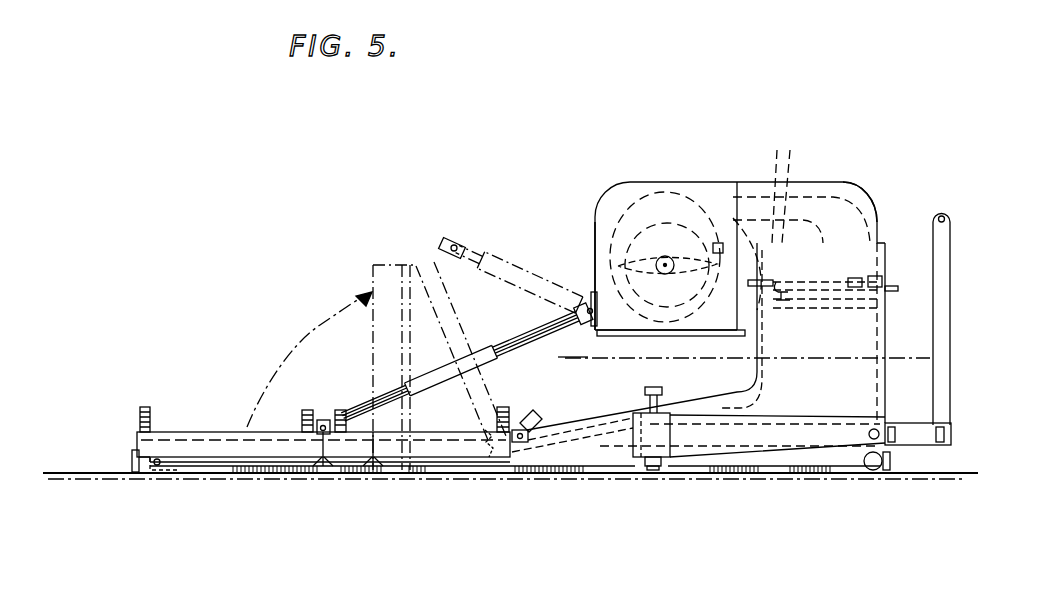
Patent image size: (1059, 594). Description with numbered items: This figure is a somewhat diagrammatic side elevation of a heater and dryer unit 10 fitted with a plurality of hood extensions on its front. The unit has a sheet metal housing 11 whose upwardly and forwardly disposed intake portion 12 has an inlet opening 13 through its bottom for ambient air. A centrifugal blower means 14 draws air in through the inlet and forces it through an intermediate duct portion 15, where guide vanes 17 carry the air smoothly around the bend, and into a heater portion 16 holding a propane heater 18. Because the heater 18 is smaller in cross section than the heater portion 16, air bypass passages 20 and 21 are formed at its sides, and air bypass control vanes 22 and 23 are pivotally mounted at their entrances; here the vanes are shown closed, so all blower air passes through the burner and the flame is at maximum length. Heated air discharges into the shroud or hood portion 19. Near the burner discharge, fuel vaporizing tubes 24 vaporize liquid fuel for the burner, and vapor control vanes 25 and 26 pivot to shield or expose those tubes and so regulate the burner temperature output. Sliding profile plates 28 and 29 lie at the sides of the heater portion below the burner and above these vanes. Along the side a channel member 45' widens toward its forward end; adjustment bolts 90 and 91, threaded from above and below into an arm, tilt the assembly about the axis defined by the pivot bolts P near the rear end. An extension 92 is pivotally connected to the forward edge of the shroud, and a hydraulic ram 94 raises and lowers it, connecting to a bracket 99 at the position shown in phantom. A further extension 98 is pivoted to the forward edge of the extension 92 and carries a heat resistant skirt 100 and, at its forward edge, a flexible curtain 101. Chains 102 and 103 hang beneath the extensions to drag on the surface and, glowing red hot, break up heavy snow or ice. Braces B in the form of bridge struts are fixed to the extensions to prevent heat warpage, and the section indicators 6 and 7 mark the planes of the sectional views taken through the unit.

The heater and dryer unit 10 is at (594, 165).
The housing 11 is at (822, 174).
The intake portion 12 is at (593, 214).
The inlet opening 13 is at (639, 331).
The blower means 14 is at (667, 222).
The intermediate duct portion 15 is at (853, 182).
The heater portion 16 is at (886, 243).
The guide vanes 17 is at (781, 184).
The heater 18 is at (892, 278).
The shroud or hood portion 19 is at (708, 391).
The air bypass passage 20 is at (712, 252).
The air bypass passage 21 is at (872, 278).
The air bypass control vane 22 is at (758, 233).
The air bypass control vane 23 is at (867, 232).
The fuel vaporizing tubes 24 is at (812, 300).
The vapor control vane 25 is at (795, 268).
The vapor control vane 26 is at (841, 272).
The sliding profile plate 28 is at (748, 284).
The sliding profile plate 29 is at (888, 281).
The channel member 45' is at (775, 461).
The adjustment bolt 90 is at (641, 396).
The adjustment bolt 91 is at (645, 470).
The extension 92 is at (358, 462).
The hydraulic ram 94 is at (520, 332).
The further extension 98 is at (226, 430).
The bracket 99 is at (322, 418).
The heat resistant skirt 100 is at (262, 462).
The flexible curtain 101 is at (132, 460).
The chains 102 is at (165, 470).
The chains 103 is at (478, 445).
The pivot bolts P is at (865, 437).
The brace B is at (143, 408).
The section line 6- 6 is at (572, 342).
The section line 7- 7 is at (506, 490).